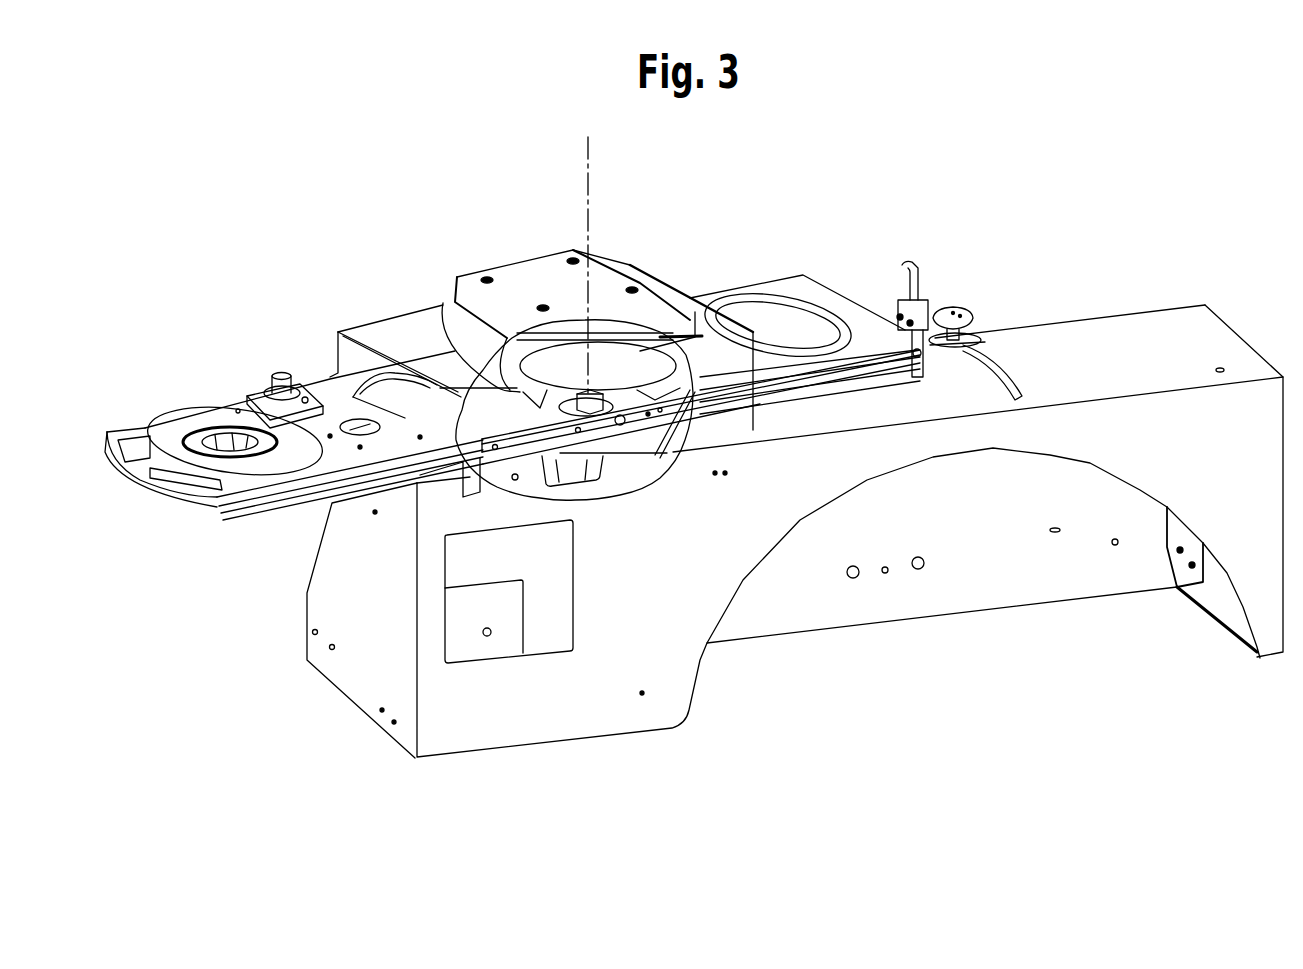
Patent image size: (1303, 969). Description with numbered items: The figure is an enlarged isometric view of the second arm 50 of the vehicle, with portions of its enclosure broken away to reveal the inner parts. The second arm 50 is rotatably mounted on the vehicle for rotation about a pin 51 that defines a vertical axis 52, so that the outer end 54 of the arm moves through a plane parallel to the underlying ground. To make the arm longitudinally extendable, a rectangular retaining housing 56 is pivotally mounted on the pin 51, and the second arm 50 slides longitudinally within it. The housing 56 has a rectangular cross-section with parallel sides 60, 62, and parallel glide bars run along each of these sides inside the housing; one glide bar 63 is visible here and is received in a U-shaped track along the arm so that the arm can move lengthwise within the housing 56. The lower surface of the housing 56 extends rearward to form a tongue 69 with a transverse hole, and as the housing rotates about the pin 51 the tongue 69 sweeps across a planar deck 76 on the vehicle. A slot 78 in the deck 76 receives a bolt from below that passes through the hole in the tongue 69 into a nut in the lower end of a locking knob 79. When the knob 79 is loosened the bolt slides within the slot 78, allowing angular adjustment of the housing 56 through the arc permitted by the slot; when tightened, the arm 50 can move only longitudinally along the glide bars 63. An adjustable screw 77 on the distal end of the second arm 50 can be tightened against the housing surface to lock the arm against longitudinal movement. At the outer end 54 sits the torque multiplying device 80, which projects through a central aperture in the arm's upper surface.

The second arm 50 is at (133, 508).
The pin 51 is at (443, 303).
The vertical axis 52 is at (590, 197).
The outer end 54 is at (142, 422).
The retaining housing 56 is at (399, 303).
The parallel side 60 is at (332, 353).
The parallel side 62 is at (745, 348).
The glide bar 63 is at (520, 453).
The tongue 69 is at (950, 343).
The planar deck 76 is at (1120, 328).
The adjustable screw 77 is at (916, 258).
The slot 78 is at (1005, 360).
The locking knob 79 is at (972, 310).
The torque multiplying device 80 is at (207, 396).